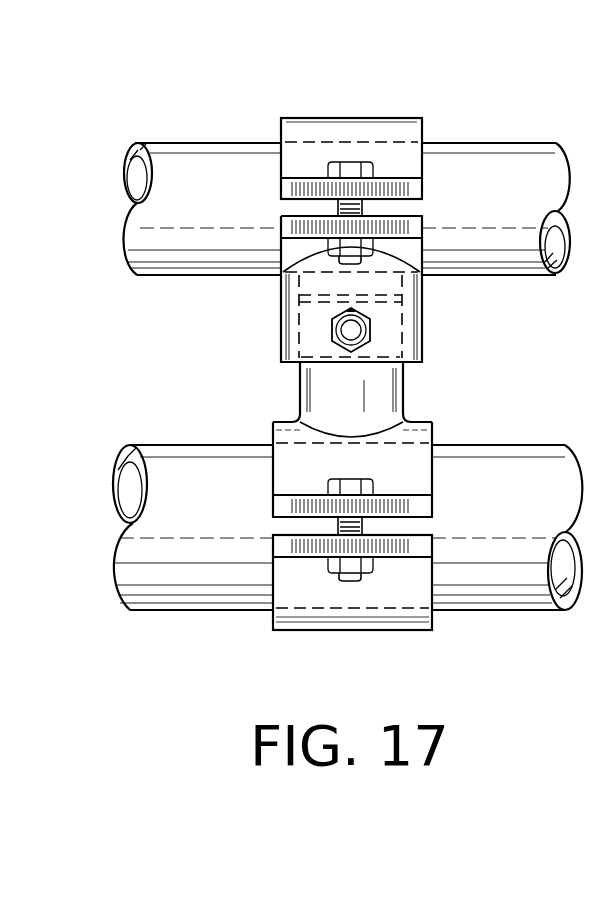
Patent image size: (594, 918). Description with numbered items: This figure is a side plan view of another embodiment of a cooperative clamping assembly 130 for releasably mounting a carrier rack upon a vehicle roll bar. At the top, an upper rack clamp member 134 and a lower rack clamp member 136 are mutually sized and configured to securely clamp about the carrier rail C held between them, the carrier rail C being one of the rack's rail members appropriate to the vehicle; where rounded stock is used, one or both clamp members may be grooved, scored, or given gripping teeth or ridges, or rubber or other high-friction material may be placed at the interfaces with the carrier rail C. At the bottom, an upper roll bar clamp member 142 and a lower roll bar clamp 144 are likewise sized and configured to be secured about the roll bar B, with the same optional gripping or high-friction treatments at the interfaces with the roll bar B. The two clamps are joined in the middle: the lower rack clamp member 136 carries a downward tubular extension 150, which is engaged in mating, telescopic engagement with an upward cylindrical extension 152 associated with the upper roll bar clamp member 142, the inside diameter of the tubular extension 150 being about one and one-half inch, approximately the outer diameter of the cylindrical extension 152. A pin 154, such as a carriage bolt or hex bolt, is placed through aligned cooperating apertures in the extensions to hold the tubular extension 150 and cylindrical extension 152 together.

The cooperative clamping assembly 130 is at (236, 77).
The upper rack clamp member 134 is at (343, 125).
The lower rack clamp member 136 is at (410, 252).
The downward tubular extension 150 is at (293, 318).
The upward cylindrical extension 152 is at (312, 390).
The pin 154 is at (375, 330).
The upper roll bar clamp member 142 is at (415, 425).
The lower roll bar clamp 144 is at (382, 614).
The roll bar B is at (525, 465).
The carrier rail C is at (502, 165).